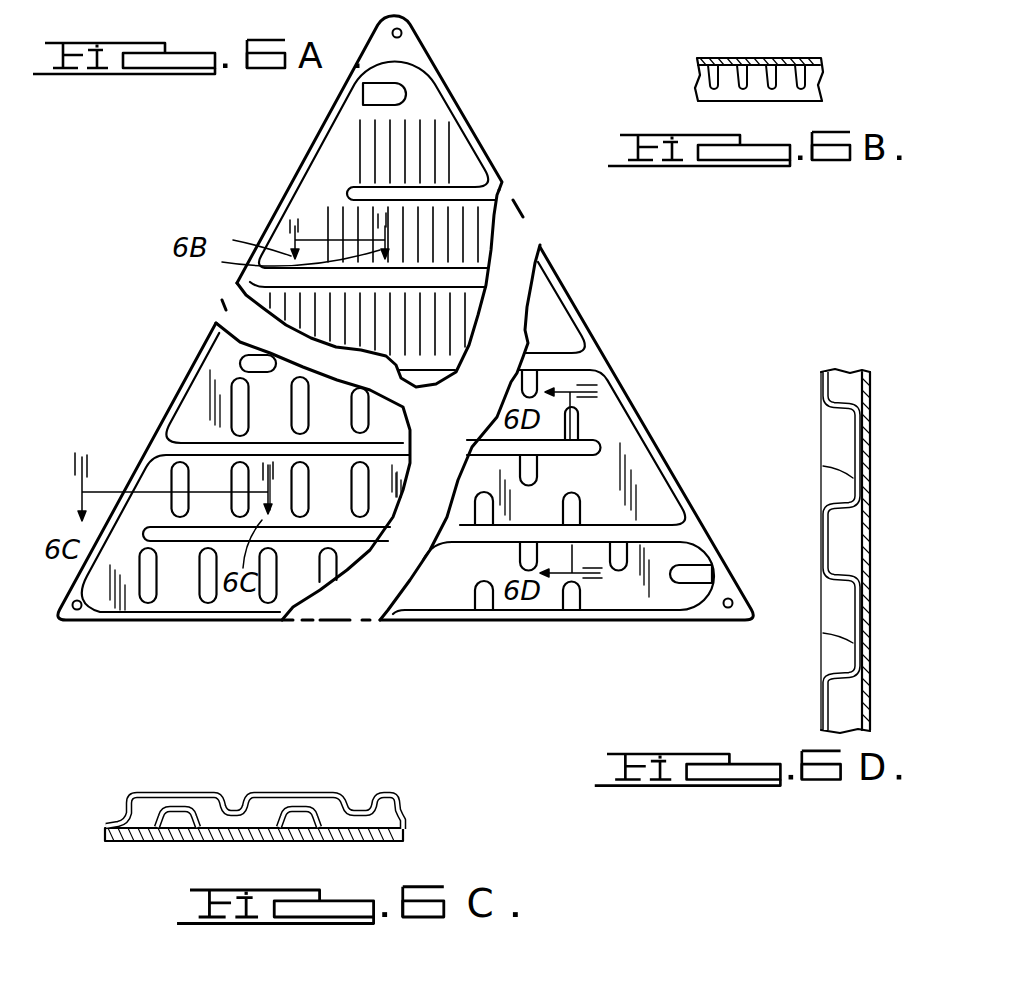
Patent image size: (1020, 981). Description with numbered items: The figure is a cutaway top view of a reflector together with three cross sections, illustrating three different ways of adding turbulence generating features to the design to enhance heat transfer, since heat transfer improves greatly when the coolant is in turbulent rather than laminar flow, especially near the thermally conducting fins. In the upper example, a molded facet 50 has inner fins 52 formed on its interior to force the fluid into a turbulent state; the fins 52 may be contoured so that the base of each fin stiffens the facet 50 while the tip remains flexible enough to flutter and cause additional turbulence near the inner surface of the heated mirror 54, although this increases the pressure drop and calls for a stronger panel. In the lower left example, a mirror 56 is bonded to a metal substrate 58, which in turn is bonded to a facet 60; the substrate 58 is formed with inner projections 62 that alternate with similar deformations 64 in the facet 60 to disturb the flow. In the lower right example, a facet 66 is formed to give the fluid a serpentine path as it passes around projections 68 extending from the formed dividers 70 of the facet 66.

In FIG. 6A, the molded facet 50 is at (446, 85).
In FIG. 6B, the inner fins 52 is at (763, 66).
In FIG. 6B, the heated mirror 54 is at (787, 101).
In FIG. 6C, the mirror 56 is at (183, 843).
In FIG. 6C, the metal substrate 58 is at (209, 828).
In FIG. 6C, the facet 60 is at (267, 790).
In FIG. 6C, the inner projections 62 is at (160, 792).
In FIG. 6C, the deformations 64 is at (391, 801).
In FIG. 6D, the facet 66 is at (820, 478).
In FIG. 6D, the projections 68 is at (840, 438).
In FIG. 6D, the formed dividers 70 is at (840, 486).